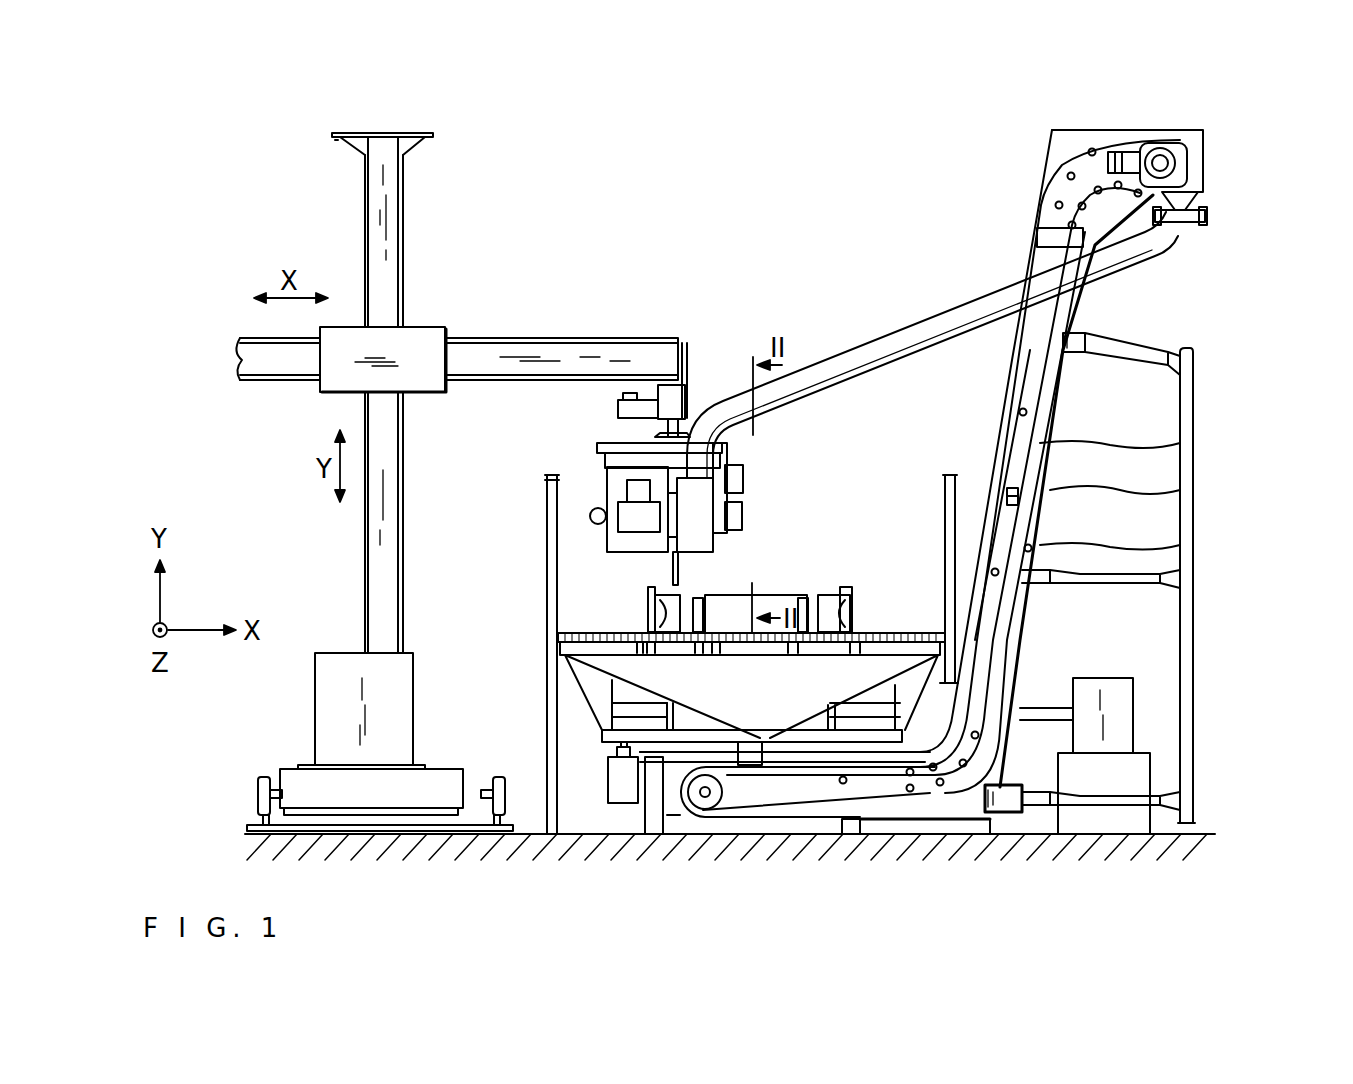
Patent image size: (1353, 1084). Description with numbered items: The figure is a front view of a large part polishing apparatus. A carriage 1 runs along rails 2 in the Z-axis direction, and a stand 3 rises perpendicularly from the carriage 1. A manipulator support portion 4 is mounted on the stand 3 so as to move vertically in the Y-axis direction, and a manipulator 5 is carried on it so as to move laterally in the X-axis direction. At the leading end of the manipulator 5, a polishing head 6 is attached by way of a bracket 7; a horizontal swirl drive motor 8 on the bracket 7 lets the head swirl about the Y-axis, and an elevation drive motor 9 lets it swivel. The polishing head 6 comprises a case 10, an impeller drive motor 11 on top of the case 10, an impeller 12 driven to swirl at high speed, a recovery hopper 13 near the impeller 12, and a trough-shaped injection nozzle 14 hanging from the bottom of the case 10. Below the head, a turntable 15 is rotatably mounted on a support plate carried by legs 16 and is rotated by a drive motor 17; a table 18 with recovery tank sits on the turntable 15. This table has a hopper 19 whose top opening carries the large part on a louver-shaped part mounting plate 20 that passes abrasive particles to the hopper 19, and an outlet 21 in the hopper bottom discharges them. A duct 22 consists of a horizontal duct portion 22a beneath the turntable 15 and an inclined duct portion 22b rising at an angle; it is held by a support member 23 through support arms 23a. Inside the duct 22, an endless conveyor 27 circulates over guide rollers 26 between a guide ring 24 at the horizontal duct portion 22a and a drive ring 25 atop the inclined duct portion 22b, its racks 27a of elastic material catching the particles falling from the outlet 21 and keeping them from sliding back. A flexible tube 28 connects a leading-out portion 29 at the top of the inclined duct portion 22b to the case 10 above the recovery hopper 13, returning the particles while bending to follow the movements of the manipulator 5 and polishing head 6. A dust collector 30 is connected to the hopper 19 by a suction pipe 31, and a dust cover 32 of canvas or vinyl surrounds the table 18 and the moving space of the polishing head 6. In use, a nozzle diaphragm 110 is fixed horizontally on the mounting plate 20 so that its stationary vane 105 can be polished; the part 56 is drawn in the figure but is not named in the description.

The carriage 1 is at (362, 793).
The rails 2 is at (262, 814).
The stand 3 is at (382, 188).
The manipulator support portion 4 is at (420, 340).
The manipulator 5 is at (270, 360).
The polishing head 6 is at (740, 458).
The bracket 7 is at (690, 395).
The horizontal swirl drive motor 8 is at (665, 390).
The elevation drive motor 9 is at (745, 515).
The case 10 is at (740, 535).
The impeller drive motor 11 is at (623, 513).
The impeller 12 is at (655, 540).
The recovery hopper 13 is at (692, 513).
The injection nozzle 14 is at (680, 568).
The turntable 15 is at (645, 748).
The legs 16 is at (652, 810).
The drive motor 17 is at (622, 790).
The table with recovery tank 18 is at (597, 705).
The hopper 19 is at (587, 667).
The louver-shaped part mounting plate 20 is at (932, 636).
The outlet 21 is at (747, 770).
The duct 22 is at (951, 494).
The horizontal duct portion 22a is at (935, 826).
The inclined duct portion 22b is at (988, 478).
The support member 23 is at (1195, 522).
The support arm 23a is at (1130, 343).
The guide ring 24 is at (705, 800).
The drive ring 25 is at (1158, 140).
The guide rollers 26 is at (1093, 140).
The endless conveyor 27 is at (750, 772).
The racks 27a is at (1180, 443).
The flexible tube 28 is at (793, 388).
The leading-out portion 29 is at (1195, 228).
The dust collector 30 is at (1118, 722).
The suction pipe 31 is at (1040, 812).
The dust cover 32 is at (547, 540).
The clamp 56 is at (862, 600).
The stationary vane 105 is at (660, 613).
The nozzle diaphragm 110 is at (815, 588).